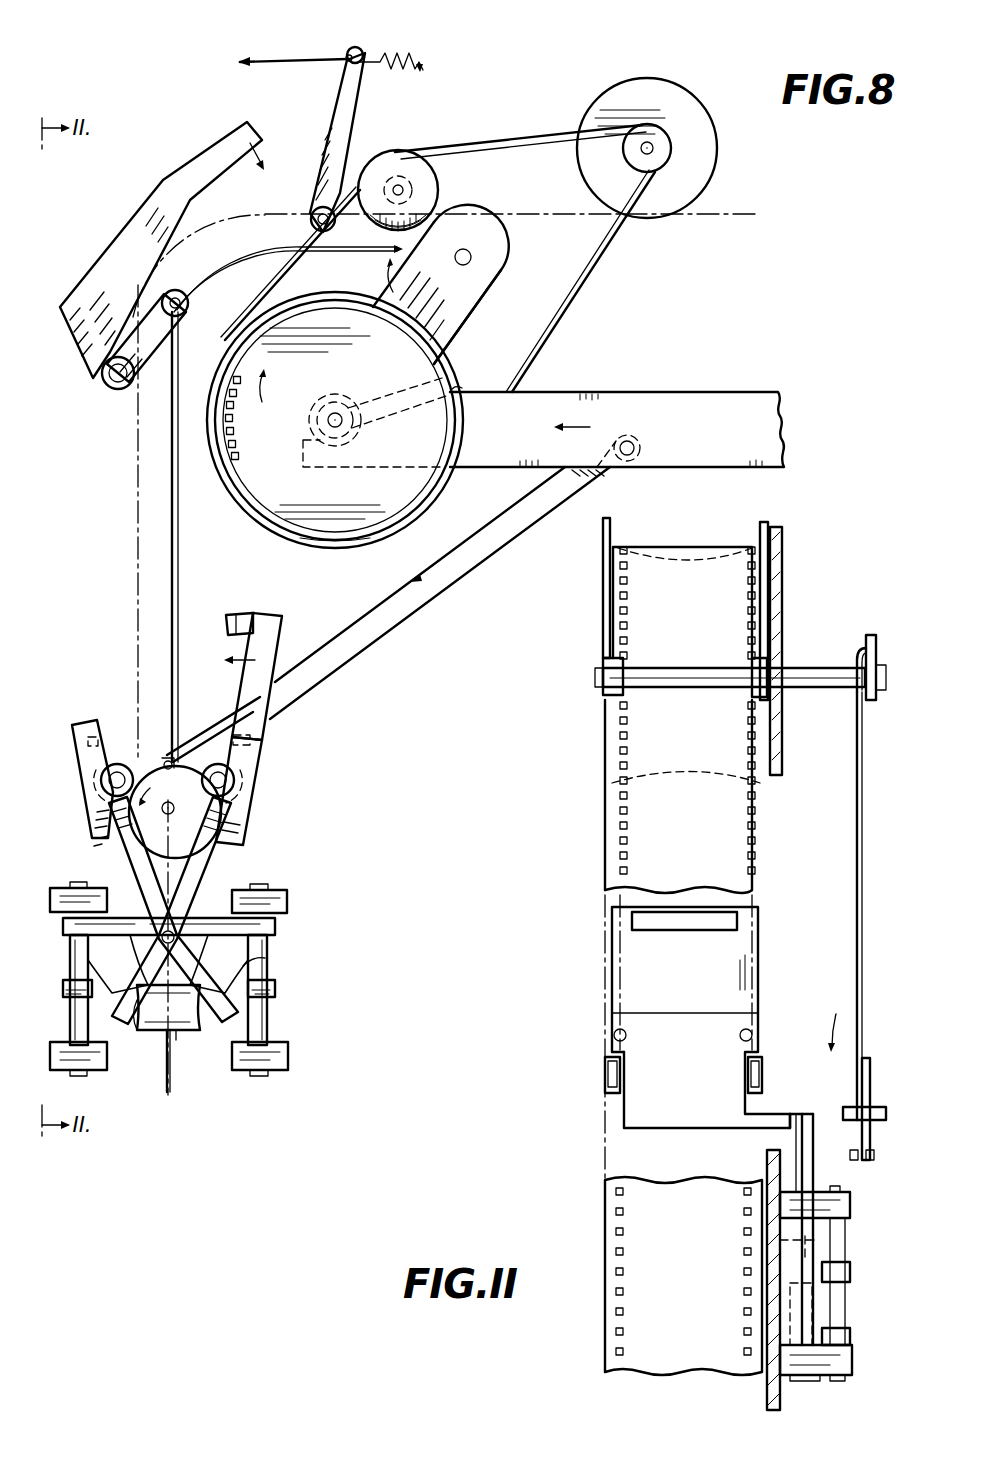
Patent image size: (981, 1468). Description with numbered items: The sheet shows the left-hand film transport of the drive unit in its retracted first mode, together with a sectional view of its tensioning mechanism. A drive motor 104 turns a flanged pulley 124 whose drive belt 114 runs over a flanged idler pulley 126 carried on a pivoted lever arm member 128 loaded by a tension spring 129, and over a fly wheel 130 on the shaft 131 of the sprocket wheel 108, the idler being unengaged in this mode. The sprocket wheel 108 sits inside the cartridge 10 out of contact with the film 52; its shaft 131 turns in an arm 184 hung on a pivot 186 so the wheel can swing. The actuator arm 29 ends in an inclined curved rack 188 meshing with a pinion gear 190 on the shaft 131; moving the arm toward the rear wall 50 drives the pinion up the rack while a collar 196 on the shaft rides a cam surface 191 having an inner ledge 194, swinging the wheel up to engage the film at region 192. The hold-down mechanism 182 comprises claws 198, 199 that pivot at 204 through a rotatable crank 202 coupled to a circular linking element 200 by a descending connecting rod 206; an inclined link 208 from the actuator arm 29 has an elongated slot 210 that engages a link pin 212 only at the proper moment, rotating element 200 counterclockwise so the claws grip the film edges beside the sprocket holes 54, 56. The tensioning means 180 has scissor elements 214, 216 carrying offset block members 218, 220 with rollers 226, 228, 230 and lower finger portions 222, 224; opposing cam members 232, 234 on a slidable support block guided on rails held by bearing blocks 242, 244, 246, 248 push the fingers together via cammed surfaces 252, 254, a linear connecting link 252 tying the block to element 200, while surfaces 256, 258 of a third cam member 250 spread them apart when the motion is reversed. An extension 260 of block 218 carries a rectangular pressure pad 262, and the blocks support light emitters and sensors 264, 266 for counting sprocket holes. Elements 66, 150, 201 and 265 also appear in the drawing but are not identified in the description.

In FIG. 8, the cartridge 10 is at (516, 213).
In FIG. 8, the actuator arm 29 is at (744, 390).
In FIG. 8, the rear wall 50 is at (136, 481).
In FIG. 8, the film 52 is at (268, 249).
In FIG. 11, the film 52 is at (605, 858).
In FIG. 11, the sprocket holes 54 is at (630, 735).
In FIG. 11, the sprocket holes 56 is at (747, 756).
In FIG. 8, the web guide path 66 is at (224, 215).
In FIG. 8, the drive motor 104 is at (678, 90).
In FIG. 8, the sprocket wheel 108 is at (248, 522).
In FIG. 11, the sprocket wheel 108 is at (686, 562).
In FIG. 8, the drive belt 114 is at (537, 144).
In FIG. 8, the flanged pulley 124 is at (663, 158).
In FIG. 8, the flanged idler pulley 126 is at (410, 151).
In FIG. 8, the lever arm member 128 is at (352, 100).
In FIG. 8, the tension spring 129 is at (417, 62).
In FIG. 8, the fly wheel 130 is at (344, 548).
In FIG. 8, the shaft 131 is at (337, 412).
In FIG. 8, the actuating rod 150 is at (307, 58).
In FIG. 8, the film tensioning means 180 is at (312, 841).
In FIG. 11, the film tensioning means 180 is at (823, 1021).
In FIG. 8, the film hold down mechanism 182 is at (138, 199).
In FIG. 8, the arm 184 is at (490, 295).
In FIG. 8, the pivot 186 is at (441, 284).
In FIG. 8, the inclined curved rack 188 is at (412, 398).
In FIG. 8, the pinion gear 190 is at (352, 407).
In FIG. 8, the cam surface 191 is at (376, 425).
In FIG. 8, the region of the film 192 is at (216, 278).
In FIG. 8, the inner ledge 194 is at (466, 396).
In FIG. 8, the collar 196 is at (325, 406).
In FIG. 8, the film hold down claw 198 is at (222, 144).
In FIG. 11, the film hold down claw 198 is at (766, 526).
In FIG. 11, the film hold down claw 199 is at (616, 528).
In FIG. 8, the circular linking element 200 is at (212, 843).
In FIG. 11, the circular linking element 200 is at (872, 1066).
In FIG. 8, the hub hole 201 is at (191, 808).
In FIG. 11, the hub hole 201 is at (888, 1113).
In FIG. 8, the rotatable crank 202 is at (168, 291).
In FIG. 11, the rotatable crank 202 is at (867, 636).
In FIG. 8, the pivot 204 is at (118, 391).
In FIG. 11, the pivot 204 is at (806, 667).
In FIG. 8, the connecting rod 206 is at (180, 572).
In FIG. 11, the connecting rod 206 is at (866, 885).
In FIG. 8, the inclined link 208 is at (410, 611).
In FIG. 8, the elongated slot 210 is at (232, 706).
In FIG. 8, the link pin 212 is at (164, 755).
In FIG. 8, the scissor element 214 is at (244, 846).
In FIG. 11, the scissor element 214 is at (806, 1152).
In FIG. 8, the scissor element 216 is at (104, 858).
In FIG. 11, the scissor element 216 is at (774, 1118).
In FIG. 8, the offset block member 218 is at (256, 766).
In FIG. 11, the offset block member 218 is at (800, 1246).
In FIG. 8, the offset block member 220 is at (72, 780).
In FIG. 11, the offset block member 220 is at (663, 1116).
In FIG. 8, the finger portion 222 is at (82, 1012).
In FIG. 11, the finger portion 222 is at (812, 1255).
In FIG. 8, the finger portion 224 is at (262, 1012).
In FIG. 11, the finger portion 224 is at (795, 1273).
In FIG. 11, the roller 226 is at (603, 1061).
In FIG. 8, the roller 228 is at (124, 762).
In FIG. 11, the roller 228 is at (762, 1068).
In FIG. 8, the roller 230 is at (236, 784).
In FIG. 8, the cam member 232 is at (98, 946).
In FIG. 8, the cam member 234 is at (244, 966).
In FIG. 8, the bearing block 242 is at (61, 890).
In FIG. 8, the bearing block 244 is at (97, 1070).
In FIG. 8, the bearing block 246 is at (290, 898).
In FIG. 8, the bearing block 248 is at (290, 1066).
In FIG. 8, the third cam member 250 is at (176, 1040).
In FIG. 11, the third cam member 250 is at (808, 1379).
In FIG. 8, the linear connecting link 252 is at (100, 835).
In FIG. 11, the linear connecting link 252 is at (852, 1201).
In FIG. 8, the cammed surface 254 is at (262, 958).
In FIG. 11, the cammed surface 254 is at (850, 1311).
In FIG. 8, the cam surface 256 is at (160, 1032).
In FIG. 8, the cam surface 258 is at (182, 1018).
In FIG. 8, the extension 260 is at (286, 633).
In FIG. 11, the extension 260 is at (610, 957).
In FIG. 8, the pressure pad 262 is at (241, 614).
In FIG. 11, the pressure pad 262 is at (692, 931).
In FIG. 8, the light emitters and sensors 264 is at (86, 741).
In FIG. 11, the light emitters and sensors 264 is at (744, 1042).
In FIG. 11, the left stop 265 is at (627, 1036).
In FIG. 8, the light emitters and sensors 266 is at (252, 740).